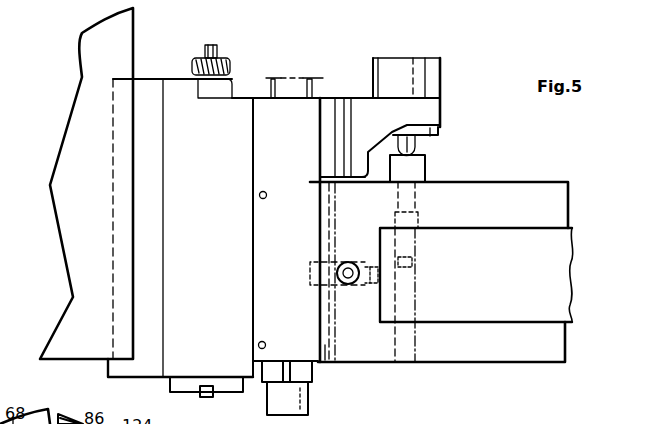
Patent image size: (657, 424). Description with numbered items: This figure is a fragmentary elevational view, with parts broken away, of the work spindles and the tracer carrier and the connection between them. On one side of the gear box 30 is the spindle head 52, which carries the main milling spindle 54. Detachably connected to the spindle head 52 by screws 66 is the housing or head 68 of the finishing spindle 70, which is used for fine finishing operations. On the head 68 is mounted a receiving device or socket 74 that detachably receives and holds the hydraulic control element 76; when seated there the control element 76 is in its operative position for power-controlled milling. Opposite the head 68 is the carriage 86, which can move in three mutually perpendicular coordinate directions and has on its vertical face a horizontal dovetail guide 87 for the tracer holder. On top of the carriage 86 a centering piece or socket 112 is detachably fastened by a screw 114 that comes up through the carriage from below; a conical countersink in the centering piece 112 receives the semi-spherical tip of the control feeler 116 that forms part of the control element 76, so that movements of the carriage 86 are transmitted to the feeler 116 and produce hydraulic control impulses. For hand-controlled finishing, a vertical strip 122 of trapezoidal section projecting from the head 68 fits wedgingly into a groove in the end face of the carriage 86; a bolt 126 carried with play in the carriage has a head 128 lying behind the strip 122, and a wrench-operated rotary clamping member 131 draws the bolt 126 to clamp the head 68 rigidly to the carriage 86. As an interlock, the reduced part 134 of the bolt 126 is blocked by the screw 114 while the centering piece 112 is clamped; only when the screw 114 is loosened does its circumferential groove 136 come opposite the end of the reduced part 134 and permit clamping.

The gear box 30 is at (62, 339).
The spindle head 52 is at (150, 366).
The main spindle 54 is at (221, 393).
The screws 66 is at (259, 194).
The housing or head 68 is at (288, 112).
The finishing spindle 70 is at (300, 398).
The receiving device or socket 74 is at (328, 106).
The hydraulic control element 76 is at (420, 112).
The carriage 86 is at (527, 197).
The dovetail guide 87 is at (552, 232).
The centering piece or socket 112 is at (408, 170).
The screw 114 is at (403, 348).
The control feeler 116 is at (418, 146).
The vertical strip 122 is at (327, 352).
The bolt 126 is at (336, 259).
The head 128 is at (309, 273).
The rotary clamping member 131 is at (350, 286).
The reduced part 134 is at (380, 273).
The circumferential groove 136 is at (414, 262).